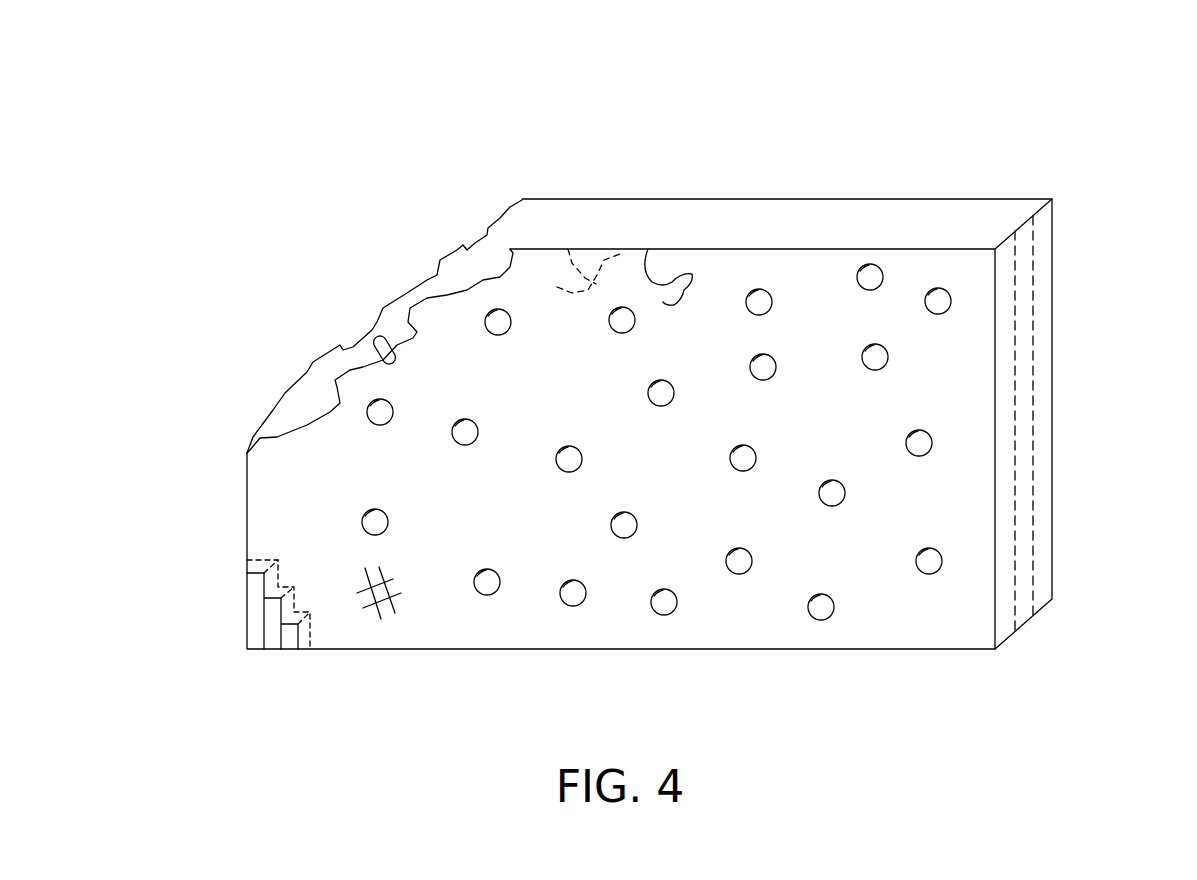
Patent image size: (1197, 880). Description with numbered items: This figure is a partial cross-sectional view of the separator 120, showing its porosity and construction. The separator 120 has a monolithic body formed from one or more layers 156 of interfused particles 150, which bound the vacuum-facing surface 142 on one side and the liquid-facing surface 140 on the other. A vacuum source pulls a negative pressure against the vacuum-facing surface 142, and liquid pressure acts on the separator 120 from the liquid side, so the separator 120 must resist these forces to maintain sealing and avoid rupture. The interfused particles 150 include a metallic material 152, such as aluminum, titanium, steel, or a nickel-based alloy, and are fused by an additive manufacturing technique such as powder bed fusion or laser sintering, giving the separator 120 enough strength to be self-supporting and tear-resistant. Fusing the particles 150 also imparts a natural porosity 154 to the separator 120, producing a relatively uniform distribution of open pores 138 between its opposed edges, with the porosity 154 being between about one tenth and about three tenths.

The separator 120 is at (296, 706).
The open pores 138 is at (737, 574).
The liquid-facing surface 140 is at (568, 249).
The vacuum-facing surface 142 is at (648, 249).
The interfused particles 150 is at (290, 610).
The metallic material 152 is at (367, 593).
The porosity 154 is at (247, 118).
The layers 156 is at (1068, 345).